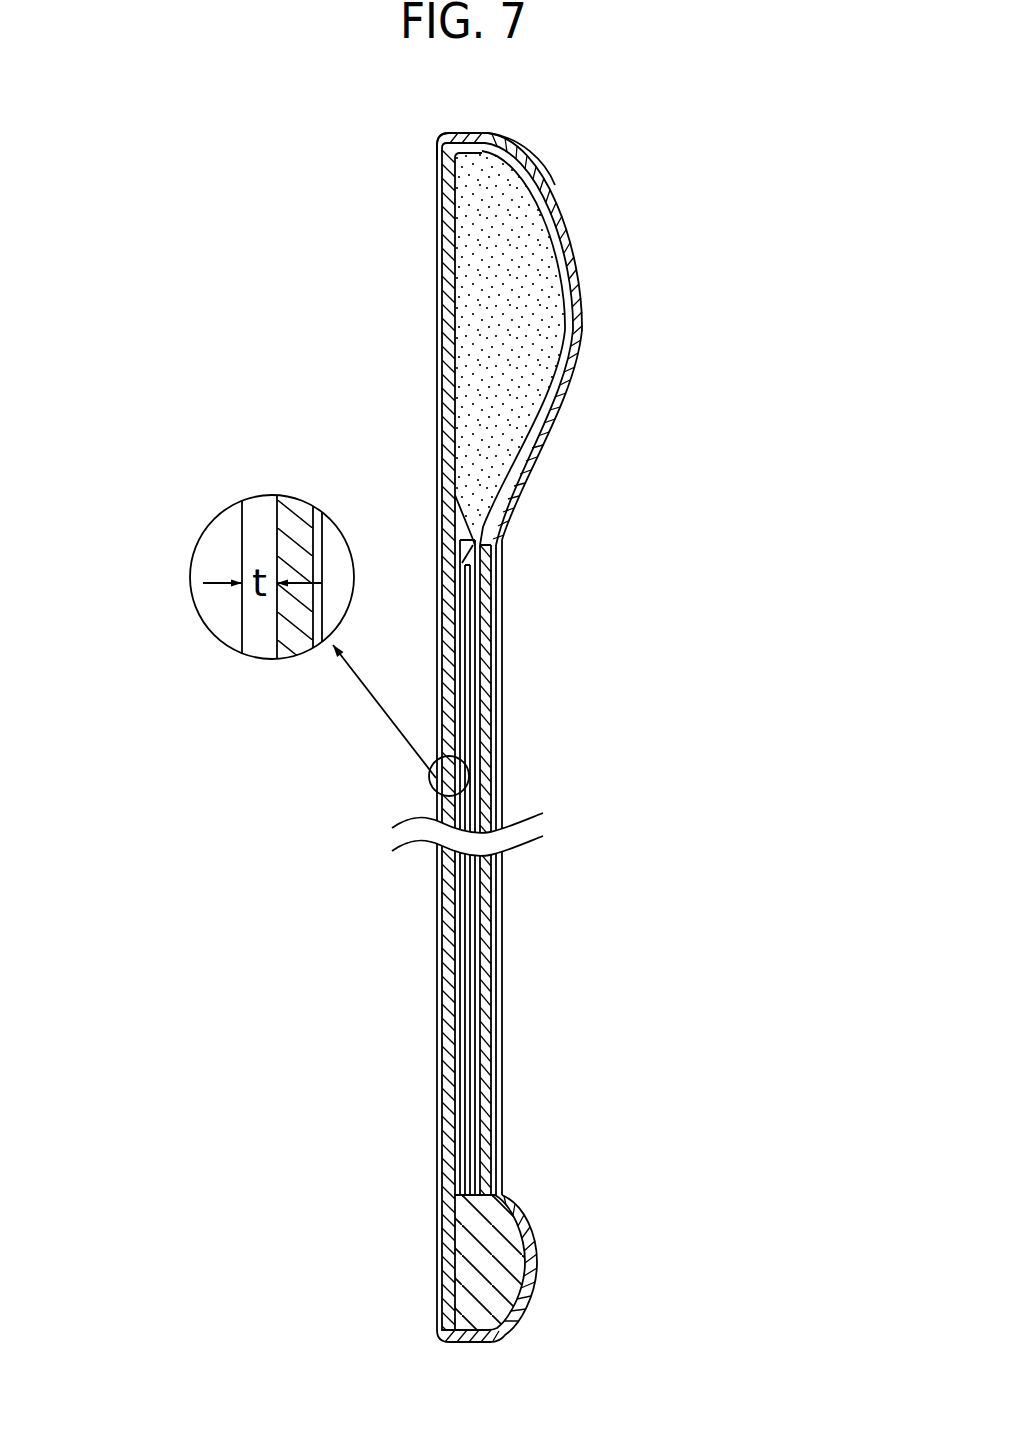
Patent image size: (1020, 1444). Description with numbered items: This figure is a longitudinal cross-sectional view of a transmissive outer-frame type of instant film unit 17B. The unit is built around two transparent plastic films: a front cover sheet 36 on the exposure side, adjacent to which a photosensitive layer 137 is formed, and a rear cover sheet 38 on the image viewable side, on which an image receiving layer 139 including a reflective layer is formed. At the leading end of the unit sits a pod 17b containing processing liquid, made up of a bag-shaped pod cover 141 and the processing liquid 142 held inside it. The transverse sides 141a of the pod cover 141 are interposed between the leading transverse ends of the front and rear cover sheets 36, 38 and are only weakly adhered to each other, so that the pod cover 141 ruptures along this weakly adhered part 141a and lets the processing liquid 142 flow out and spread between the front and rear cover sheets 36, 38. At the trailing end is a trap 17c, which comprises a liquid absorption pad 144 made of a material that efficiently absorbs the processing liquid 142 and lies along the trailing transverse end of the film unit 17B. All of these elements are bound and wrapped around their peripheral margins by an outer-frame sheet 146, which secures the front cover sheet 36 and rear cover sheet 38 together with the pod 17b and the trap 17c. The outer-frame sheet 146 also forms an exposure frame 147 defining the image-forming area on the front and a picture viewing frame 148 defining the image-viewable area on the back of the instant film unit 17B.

The transmissive outer-frame type of instant film unit 17B is at (584, 228).
The pod 17b is at (520, 190).
The trap 17c is at (530, 1287).
The bag-shaped pod cover 141 is at (562, 337).
The transverse sides of the pod cover 141a is at (493, 570).
The processing liquid 142 is at (487, 302).
The liquid absorption pad 144 is at (467, 1278).
The outer-frame sheet 146 is at (253, 550).
The exposure frame 147 is at (498, 1127).
The picture viewing frame 148 is at (440, 1135).
The photosensitive layer 137 is at (480, 898).
The image receiving layer 139 is at (318, 547).
The rear cover sheet 38 is at (300, 520).
The front cover sheet 36 is at (490, 738).